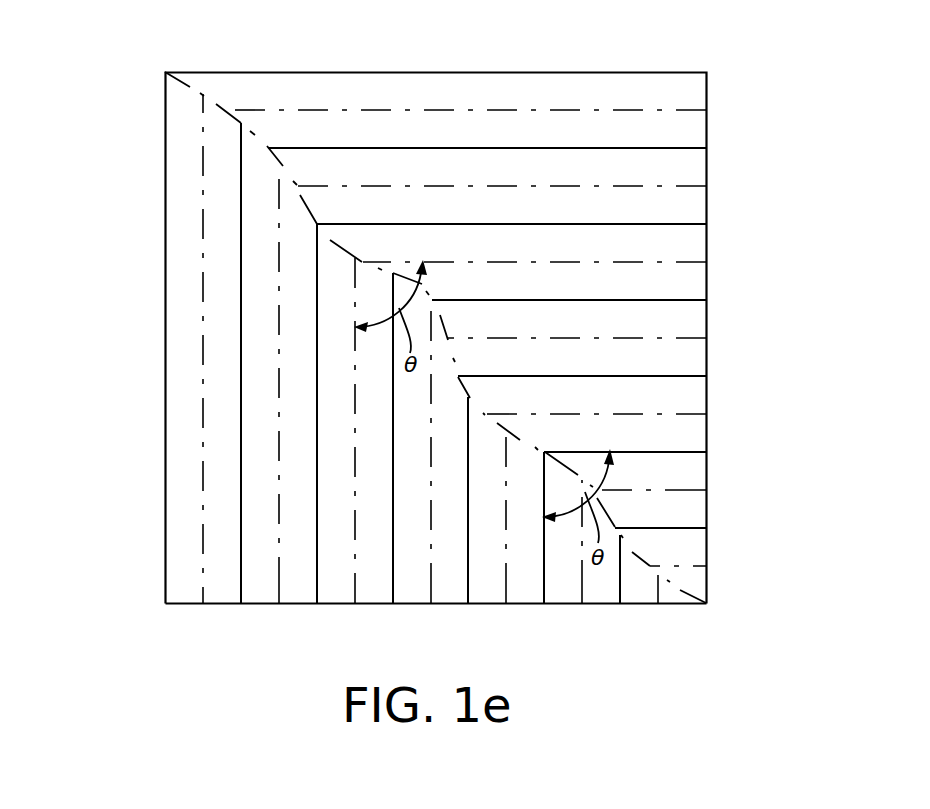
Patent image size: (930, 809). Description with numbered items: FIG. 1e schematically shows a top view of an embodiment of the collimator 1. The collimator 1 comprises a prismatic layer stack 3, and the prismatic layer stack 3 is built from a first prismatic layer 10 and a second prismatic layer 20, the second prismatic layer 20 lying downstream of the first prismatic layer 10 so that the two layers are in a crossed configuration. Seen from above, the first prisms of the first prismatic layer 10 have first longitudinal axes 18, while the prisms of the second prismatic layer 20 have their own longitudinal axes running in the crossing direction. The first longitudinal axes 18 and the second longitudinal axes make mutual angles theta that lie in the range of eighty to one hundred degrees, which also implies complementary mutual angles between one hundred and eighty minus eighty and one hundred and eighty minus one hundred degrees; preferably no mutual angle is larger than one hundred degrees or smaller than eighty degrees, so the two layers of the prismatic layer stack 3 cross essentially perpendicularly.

The collimator 1 is at (92, 88).
The prismatic layer stack 3 is at (728, 372).
The first prismatic layer 10 is at (189, 623).
The first longitudinal axes 18 is at (203, 287).
The second prismatic layer 20 is at (553, 92).